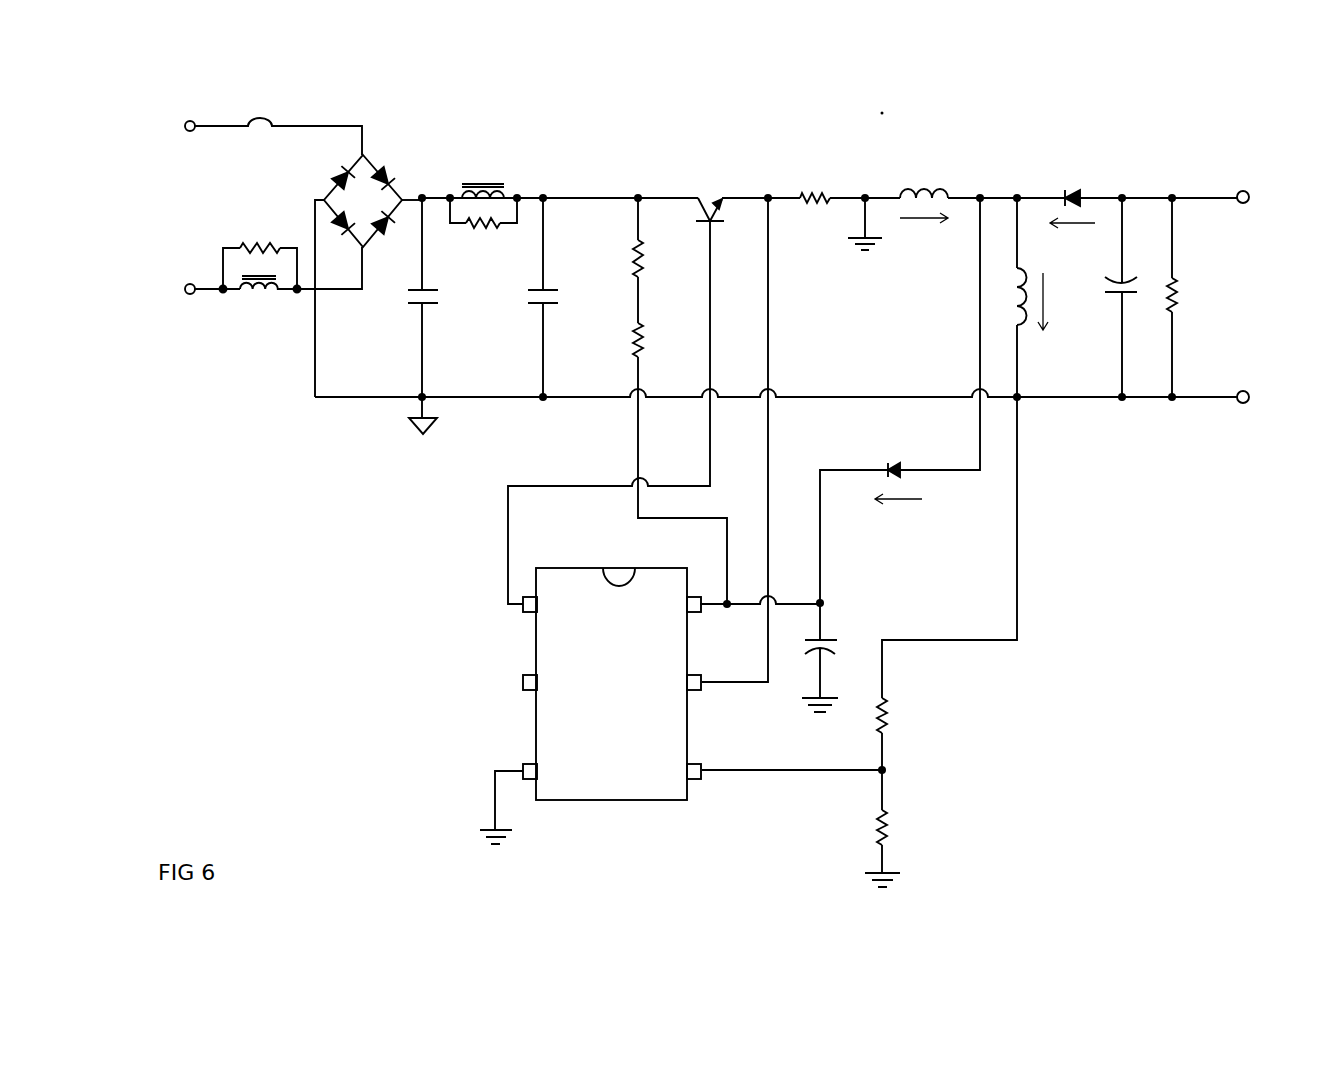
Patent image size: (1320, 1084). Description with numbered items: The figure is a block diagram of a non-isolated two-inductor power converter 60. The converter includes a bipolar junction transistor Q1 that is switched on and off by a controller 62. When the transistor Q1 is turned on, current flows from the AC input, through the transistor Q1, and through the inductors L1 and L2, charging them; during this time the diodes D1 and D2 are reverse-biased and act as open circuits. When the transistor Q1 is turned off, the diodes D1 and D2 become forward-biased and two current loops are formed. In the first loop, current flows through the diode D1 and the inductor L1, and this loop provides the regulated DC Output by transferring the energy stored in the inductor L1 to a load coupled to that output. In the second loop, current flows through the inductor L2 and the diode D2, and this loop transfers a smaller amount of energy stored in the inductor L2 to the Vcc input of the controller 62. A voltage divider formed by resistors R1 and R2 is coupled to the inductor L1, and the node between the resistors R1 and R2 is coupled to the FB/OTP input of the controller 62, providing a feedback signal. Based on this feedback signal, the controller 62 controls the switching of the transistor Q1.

The non-isolated two-inductor power converter 60 is at (312, 450).
The controller 62 is at (510, 638).
The bipolar junction transistor Q1 is at (710, 194).
The inductor L1 is at (1009, 296).
The inductor L2 is at (924, 180).
The diode D1 is at (1075, 185).
The diode D2 is at (872, 485).
The resistor R1 is at (905, 715).
The resistor R2 is at (905, 827).